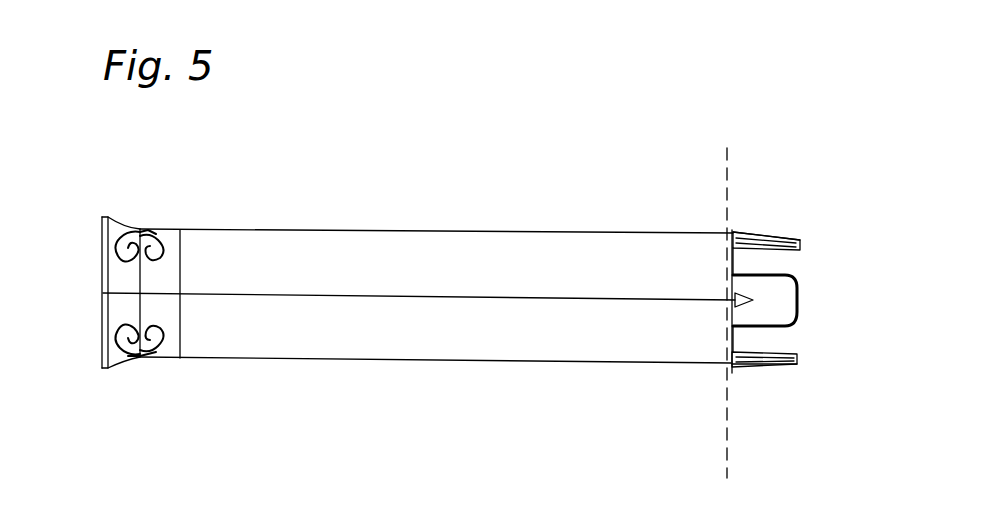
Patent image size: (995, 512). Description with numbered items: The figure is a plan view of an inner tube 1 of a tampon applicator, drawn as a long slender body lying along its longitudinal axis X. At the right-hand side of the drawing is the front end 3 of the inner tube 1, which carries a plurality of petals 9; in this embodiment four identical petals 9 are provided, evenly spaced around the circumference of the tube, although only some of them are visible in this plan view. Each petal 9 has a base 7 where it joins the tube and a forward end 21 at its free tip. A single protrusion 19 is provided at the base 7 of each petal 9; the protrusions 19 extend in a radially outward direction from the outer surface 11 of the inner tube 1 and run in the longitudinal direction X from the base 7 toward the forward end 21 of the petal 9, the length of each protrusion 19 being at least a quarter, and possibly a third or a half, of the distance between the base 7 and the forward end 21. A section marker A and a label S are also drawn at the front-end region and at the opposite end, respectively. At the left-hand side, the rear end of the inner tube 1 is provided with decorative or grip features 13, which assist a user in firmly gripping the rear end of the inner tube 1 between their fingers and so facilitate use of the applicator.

The inner tube 1 is at (418, 213).
The front end 3 is at (763, 368).
The base 7 is at (725, 270).
The petals 9 is at (800, 241).
The outer surface 11 is at (700, 232).
The decorative or grip features 13 is at (145, 360).
The protrusion 19 is at (739, 232).
The forward end 21 is at (797, 284).
The flange S is at (100, 320).
The longitudinal axis X is at (285, 300).
The section line A- A is at (716, 147).